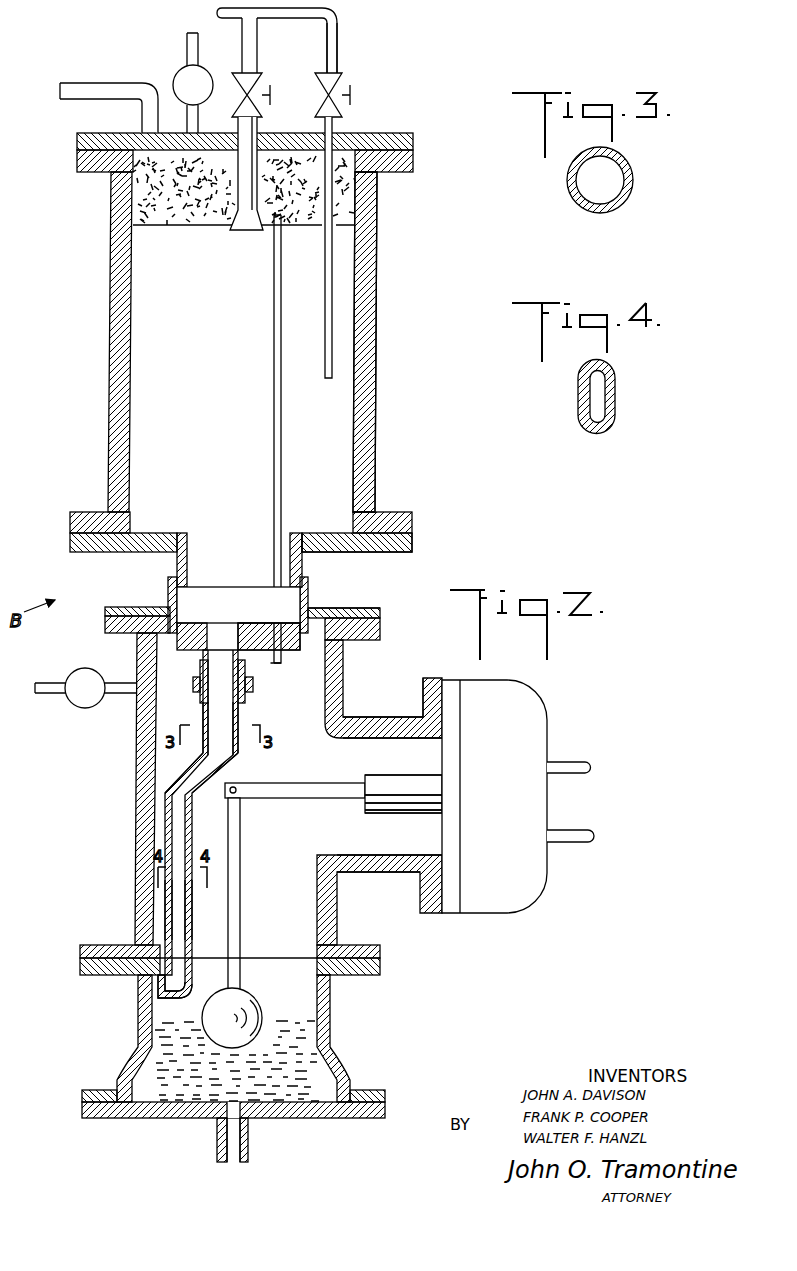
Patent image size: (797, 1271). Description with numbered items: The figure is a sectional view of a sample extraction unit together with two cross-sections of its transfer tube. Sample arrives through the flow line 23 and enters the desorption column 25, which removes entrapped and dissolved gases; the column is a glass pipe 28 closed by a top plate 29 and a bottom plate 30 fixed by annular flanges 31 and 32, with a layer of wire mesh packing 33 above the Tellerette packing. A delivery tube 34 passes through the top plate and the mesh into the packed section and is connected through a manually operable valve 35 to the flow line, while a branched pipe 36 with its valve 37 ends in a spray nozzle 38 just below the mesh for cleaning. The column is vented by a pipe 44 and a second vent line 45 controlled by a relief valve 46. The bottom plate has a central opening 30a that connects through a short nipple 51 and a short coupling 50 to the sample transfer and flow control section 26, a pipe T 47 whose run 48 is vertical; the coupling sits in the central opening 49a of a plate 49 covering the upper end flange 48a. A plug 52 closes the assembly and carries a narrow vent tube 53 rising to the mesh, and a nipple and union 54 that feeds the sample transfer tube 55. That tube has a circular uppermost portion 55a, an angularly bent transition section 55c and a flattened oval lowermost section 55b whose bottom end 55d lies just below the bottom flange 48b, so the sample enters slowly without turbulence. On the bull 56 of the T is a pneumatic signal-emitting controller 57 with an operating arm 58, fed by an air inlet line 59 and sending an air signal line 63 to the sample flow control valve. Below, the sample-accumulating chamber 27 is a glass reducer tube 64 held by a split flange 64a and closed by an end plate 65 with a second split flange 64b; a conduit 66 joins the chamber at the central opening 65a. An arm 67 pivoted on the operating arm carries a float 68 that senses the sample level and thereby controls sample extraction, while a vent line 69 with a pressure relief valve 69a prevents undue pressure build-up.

In FIG. 2, the flow line 23 is at (338, 43).
In FIG. 2, the desorption column 25 is at (390, 314).
In FIG. 2, the sample transfer and flow control section 26 is at (263, 789).
In FIG. 2, the sample-accumulating chamber 27 is at (125, 1058).
In FIG. 2, the glass pipe 28 is at (376, 356).
In FIG. 2, the top plate 29 is at (413, 145).
In FIG. 2, the bottom plate 30 is at (385, 557).
In FIG. 2, the central opening 30a is at (310, 556).
In FIG. 2, the annular flange 31 is at (397, 172).
In FIG. 2, the annular flange 32 is at (406, 512).
In FIG. 2, the wire mesh packing 33 is at (140, 208).
In FIG. 2, the delivery tube 34 is at (323, 270).
In FIG. 2, the manually operable valve 35 is at (343, 80).
In FIG. 2, the pipe 36 is at (258, 48).
In FIG. 2, the valve 37 is at (263, 107).
In FIG. 2, the spray nozzle 38 is at (236, 226).
In FIG. 2, the pipe 44 is at (102, 85).
In FIG. 2, the second vent line 45 is at (186, 41).
In FIG. 2, the relief valve 46 is at (178, 72).
In FIG. 2, the pipe T 47 is at (344, 870).
In FIG. 2, the run 48 is at (136, 742).
In FIG. 2, the upper end flange 48a is at (381, 635).
In FIG. 2, the bottom flange 48b is at (82, 945).
In FIG. 2, the plate 49 is at (381, 613).
In FIG. 2, the central opening 49a is at (316, 612).
In FIG. 2, the short coupling 50 is at (168, 588).
In FIG. 2, the short nipple 51 is at (177, 566).
In FIG. 2, the plug 52 is at (290, 656).
In FIG. 2, the vent tube 53 is at (275, 405).
In FIG. 2, the nipple and union 54 is at (195, 690).
In FIG. 2, the sample transfer tube 55 is at (163, 798).
In FIG. 2, the uppermost portion 55a is at (239, 713).
In FIG. 3, the uppermost portion 55a is at (627, 203).
In FIG. 2, the lowermost section 55b is at (187, 915).
In FIG. 4, the lowermost section 55b is at (616, 410).
In FIG. 2, the transition section 55c is at (229, 770).
In FIG. 2, the bottom end 55d is at (160, 986).
In FIG. 2, the bull 56 is at (380, 720).
In FIG. 2, the pneumatic signal-emitting controller 57 is at (488, 913).
In FIG. 2, the operating arm 58 is at (297, 799).
In FIG. 2, the air inlet line 59 is at (565, 843).
In FIG. 2, the air signal line 63 is at (567, 770).
In FIG. 2, the reducer tube 64 is at (151, 1032).
In FIG. 2, the split flange 64a is at (361, 975).
In FIG. 2, the split flange 64b is at (381, 1090).
In FIG. 2, the end plate 65 is at (338, 1118).
In FIG. 2, the central opening 65a is at (253, 1120).
In FIG. 2, the conduit 66 is at (216, 1153).
In FIG. 2, the arm 67 is at (241, 885).
In FIG. 2, the float 68 is at (258, 1010).
In FIG. 2, the vent line 69 is at (58, 696).
In FIG. 2, the pressure relief valve 69a is at (85, 668).